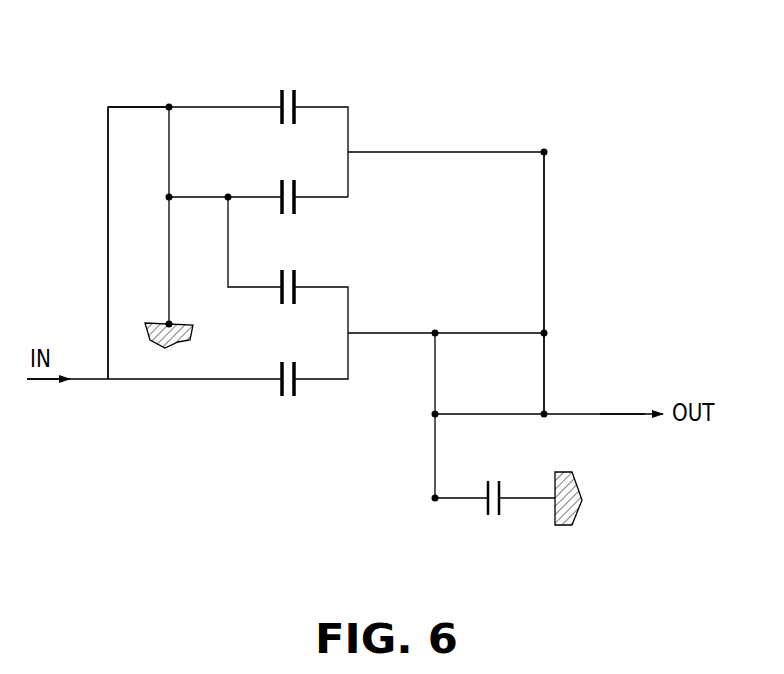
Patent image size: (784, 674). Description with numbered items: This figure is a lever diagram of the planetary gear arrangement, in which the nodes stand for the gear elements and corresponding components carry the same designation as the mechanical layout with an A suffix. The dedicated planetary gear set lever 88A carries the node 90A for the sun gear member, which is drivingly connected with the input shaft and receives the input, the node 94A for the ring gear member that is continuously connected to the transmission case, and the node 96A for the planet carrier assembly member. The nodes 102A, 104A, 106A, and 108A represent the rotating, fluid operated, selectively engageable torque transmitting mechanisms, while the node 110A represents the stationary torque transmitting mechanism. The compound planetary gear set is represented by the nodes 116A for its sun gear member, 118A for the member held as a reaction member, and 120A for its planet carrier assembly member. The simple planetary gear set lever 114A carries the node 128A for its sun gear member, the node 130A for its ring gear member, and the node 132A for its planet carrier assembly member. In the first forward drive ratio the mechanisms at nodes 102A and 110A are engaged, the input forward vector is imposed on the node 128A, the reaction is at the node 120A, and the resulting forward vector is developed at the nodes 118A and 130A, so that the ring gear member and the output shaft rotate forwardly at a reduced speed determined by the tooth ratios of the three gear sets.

The dedicated planetary gear set lever 88A is at (162, 150).
The sun gear member node 90A is at (169, 104).
The ring gear member node 94A is at (172, 323).
The planet carrier assembly member node 96A is at (169, 197).
The torque transmitting mechanism node 102A is at (291, 176).
The torque transmitting mechanism node 104A is at (290, 266).
The torque transmitting mechanism node 106A is at (290, 86).
The torque transmitting mechanism node 108A is at (288, 399).
The stationary torque transmitting mechanism node 110A is at (494, 520).
The simple planetary gear set lever 114A is at (558, 230).
The sun gear member node 116A is at (439, 328).
The reaction member node 118A is at (439, 409).
The planet carrier assembly member node 120A is at (431, 494).
The sun gear member node 128A is at (546, 146).
The ring gear member node 130A is at (549, 409).
The planet carrier assembly member node 132A is at (548, 328).